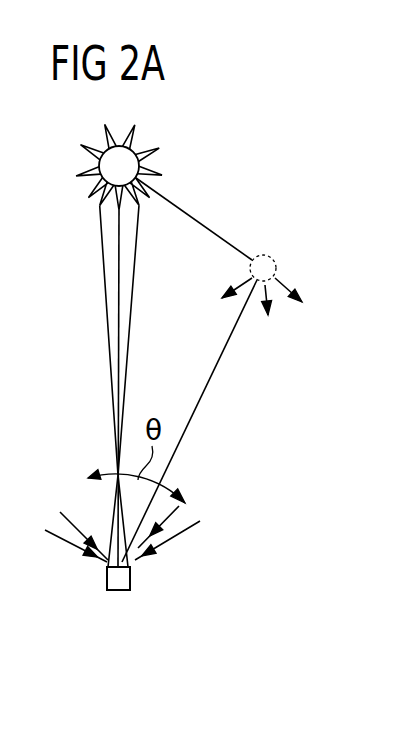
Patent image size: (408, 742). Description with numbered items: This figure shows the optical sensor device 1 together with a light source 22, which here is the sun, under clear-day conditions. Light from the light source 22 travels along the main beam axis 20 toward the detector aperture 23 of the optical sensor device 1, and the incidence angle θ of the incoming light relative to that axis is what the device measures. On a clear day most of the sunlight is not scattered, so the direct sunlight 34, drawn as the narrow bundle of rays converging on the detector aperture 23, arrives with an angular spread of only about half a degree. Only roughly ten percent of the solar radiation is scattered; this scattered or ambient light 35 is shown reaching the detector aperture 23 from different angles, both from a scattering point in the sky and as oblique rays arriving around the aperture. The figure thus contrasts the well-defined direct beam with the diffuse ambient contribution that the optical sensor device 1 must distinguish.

The optical sensor device 1 is at (118, 592).
The main beam axis 20 is at (118, 282).
The light source 22 is at (126, 167).
The detector aperture 23 is at (134, 565).
The direct sunlight 34 is at (107, 336).
The scattered or ambient light 35 is at (213, 378).